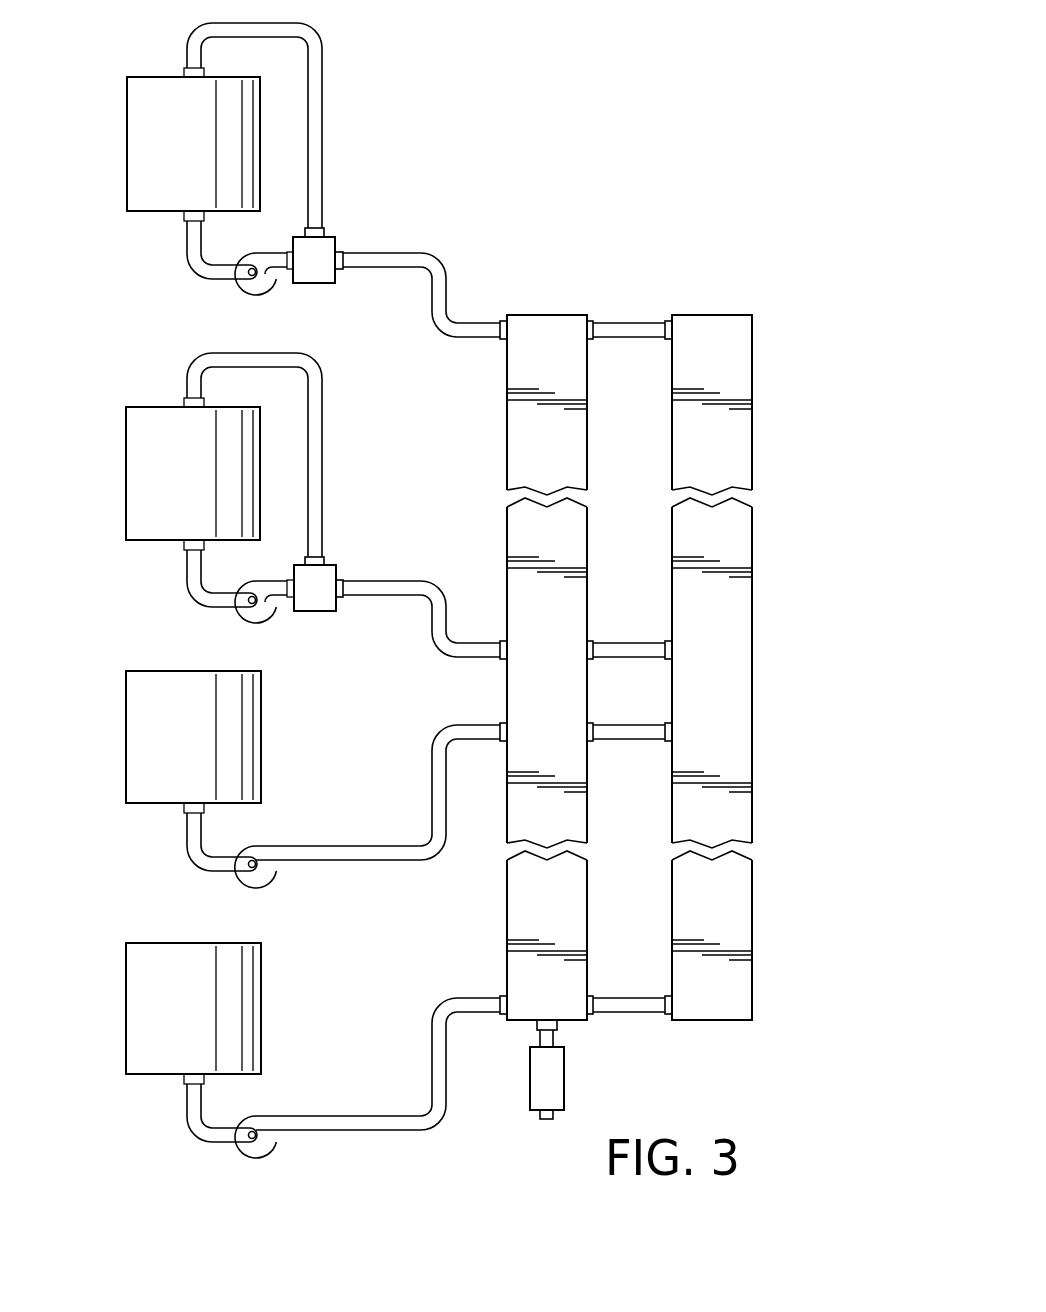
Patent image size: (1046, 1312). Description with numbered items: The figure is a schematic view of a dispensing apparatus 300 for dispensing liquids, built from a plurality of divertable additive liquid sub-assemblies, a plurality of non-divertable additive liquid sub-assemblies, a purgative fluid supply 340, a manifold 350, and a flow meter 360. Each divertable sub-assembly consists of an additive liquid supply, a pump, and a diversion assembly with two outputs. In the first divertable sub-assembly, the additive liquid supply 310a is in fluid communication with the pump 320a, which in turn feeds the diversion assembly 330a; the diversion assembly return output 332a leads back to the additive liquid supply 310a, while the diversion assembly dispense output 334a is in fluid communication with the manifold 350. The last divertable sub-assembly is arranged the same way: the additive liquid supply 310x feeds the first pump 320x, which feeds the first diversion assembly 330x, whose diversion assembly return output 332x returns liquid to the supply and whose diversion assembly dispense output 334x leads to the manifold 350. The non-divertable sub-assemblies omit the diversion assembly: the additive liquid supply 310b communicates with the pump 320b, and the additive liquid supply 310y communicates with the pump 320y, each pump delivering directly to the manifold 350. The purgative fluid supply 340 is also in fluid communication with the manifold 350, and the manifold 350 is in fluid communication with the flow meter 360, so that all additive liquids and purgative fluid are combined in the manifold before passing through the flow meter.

The dispensing apparatus 300 is at (437, 140).
The additive liquid supply 310x is at (157, 72).
The additive liquid supply 310a is at (157, 403).
The additive liquid supply 310b is at (157, 668).
The additive liquid supply 310y is at (157, 942).
The pump 320x is at (247, 290).
The pump 320a is at (261, 622).
The pump 320b is at (258, 843).
The pump 320y is at (258, 1113).
The diversion assembly 330x is at (317, 283).
The diversion assembly 330a is at (317, 612).
The diversion assembly return output 332x is at (323, 230).
The diversion assembly return output 332a is at (323, 558).
The diversion assembly dispense output 334x is at (340, 253).
The diversion assembly dispense output 334a is at (340, 581).
The purgative fluid supply 340 is at (703, 327).
The manifold 350 is at (533, 327).
The flow meter 360 is at (546, 1095).